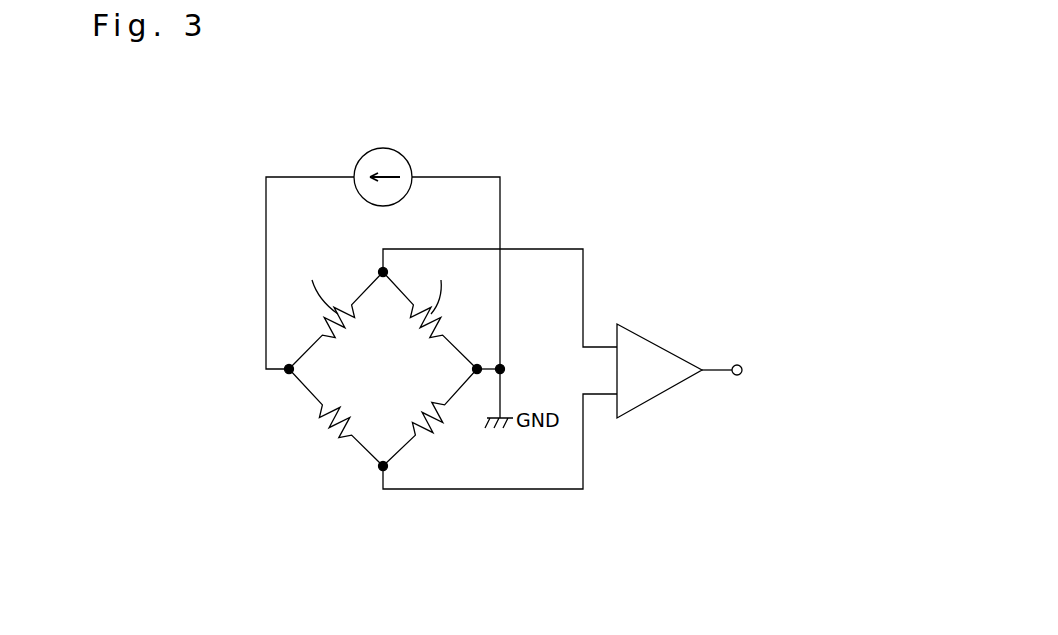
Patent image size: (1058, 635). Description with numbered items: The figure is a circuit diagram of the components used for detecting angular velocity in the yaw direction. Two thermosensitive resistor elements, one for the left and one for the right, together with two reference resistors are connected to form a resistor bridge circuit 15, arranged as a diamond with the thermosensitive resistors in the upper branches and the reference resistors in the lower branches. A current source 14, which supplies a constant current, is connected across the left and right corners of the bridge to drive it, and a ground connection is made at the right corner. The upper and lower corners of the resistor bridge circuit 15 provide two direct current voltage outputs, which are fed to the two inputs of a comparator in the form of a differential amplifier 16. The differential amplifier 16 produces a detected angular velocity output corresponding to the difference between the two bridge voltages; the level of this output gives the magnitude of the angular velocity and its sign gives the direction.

The current source 14 is at (383, 149).
The resistor bridge circuit 15 is at (278, 405).
The differential amplifier 16 is at (640, 347).